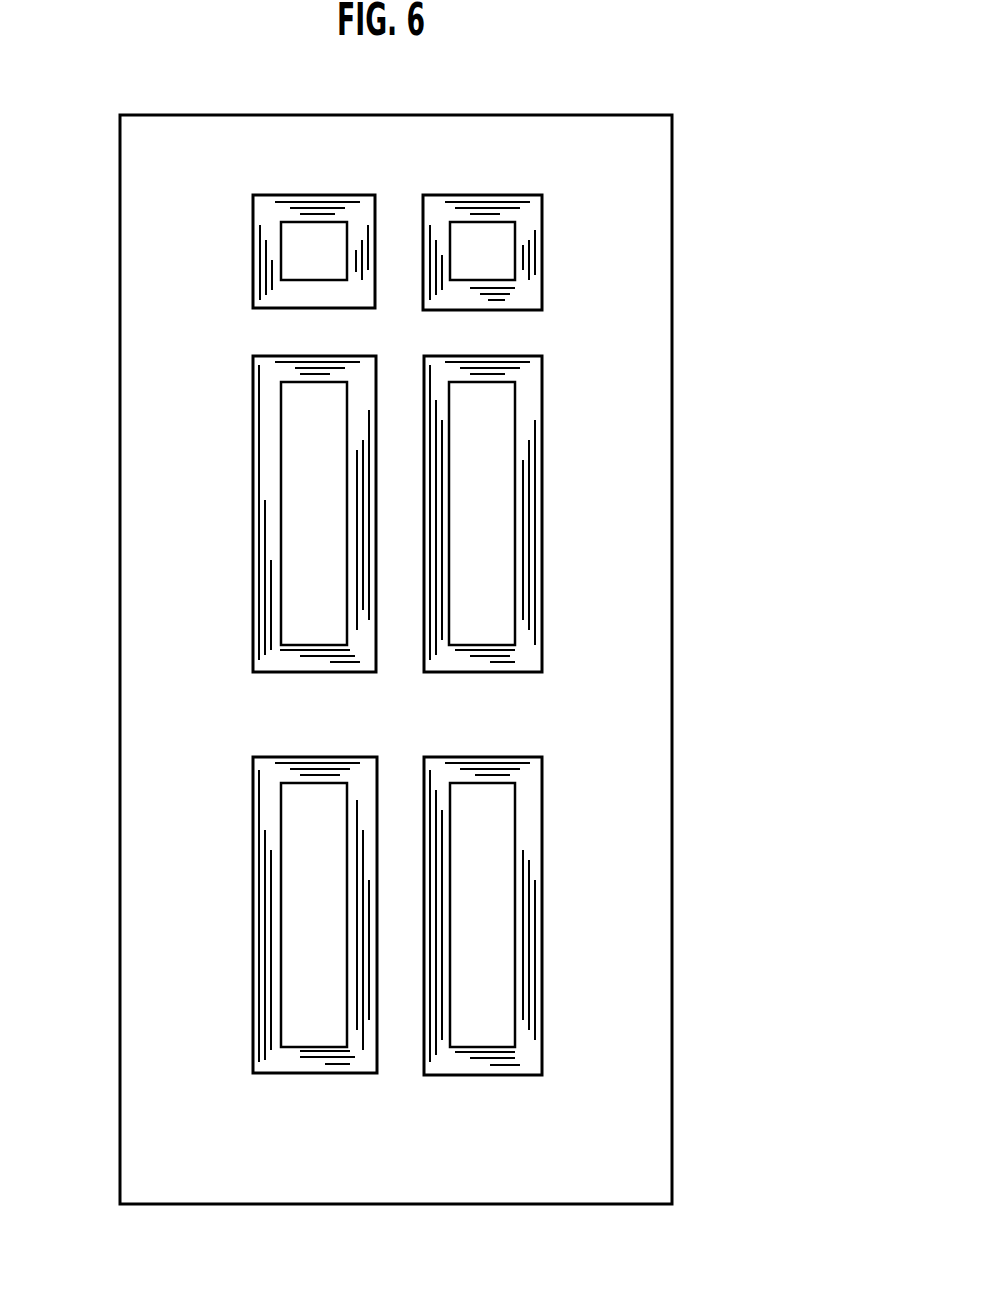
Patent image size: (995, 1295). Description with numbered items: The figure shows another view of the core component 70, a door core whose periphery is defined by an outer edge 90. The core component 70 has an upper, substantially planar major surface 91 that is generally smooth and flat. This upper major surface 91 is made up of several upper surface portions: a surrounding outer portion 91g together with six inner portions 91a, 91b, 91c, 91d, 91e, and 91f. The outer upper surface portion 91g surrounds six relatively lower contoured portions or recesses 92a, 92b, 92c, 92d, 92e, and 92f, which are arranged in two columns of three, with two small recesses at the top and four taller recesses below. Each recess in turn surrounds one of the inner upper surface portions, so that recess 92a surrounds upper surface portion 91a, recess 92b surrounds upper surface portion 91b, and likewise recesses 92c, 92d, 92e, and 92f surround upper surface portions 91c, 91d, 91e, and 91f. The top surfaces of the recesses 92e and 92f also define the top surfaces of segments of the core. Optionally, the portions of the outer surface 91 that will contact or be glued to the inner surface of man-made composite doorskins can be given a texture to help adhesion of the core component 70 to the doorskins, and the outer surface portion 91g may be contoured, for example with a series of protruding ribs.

The core component 70 is at (681, 280).
The outer edge 90 is at (120, 222).
The upper major surface 91 is at (626, 178).
The upper surface portion 91a is at (330, 268).
The upper surface portion 91b is at (499, 268).
The upper surface portion 91c is at (332, 480).
The upper surface portion 91d is at (501, 498).
The upper surface portion 91e is at (332, 874).
The upper surface portion 91f is at (498, 892).
The upper surface portion 91g is at (211, 314).
The recess 92a is at (305, 205).
The recess 92b is at (455, 205).
The recess 92c is at (273, 462).
The recess 92d is at (535, 492).
The recess 92e is at (268, 822).
The recess 92f is at (530, 833).